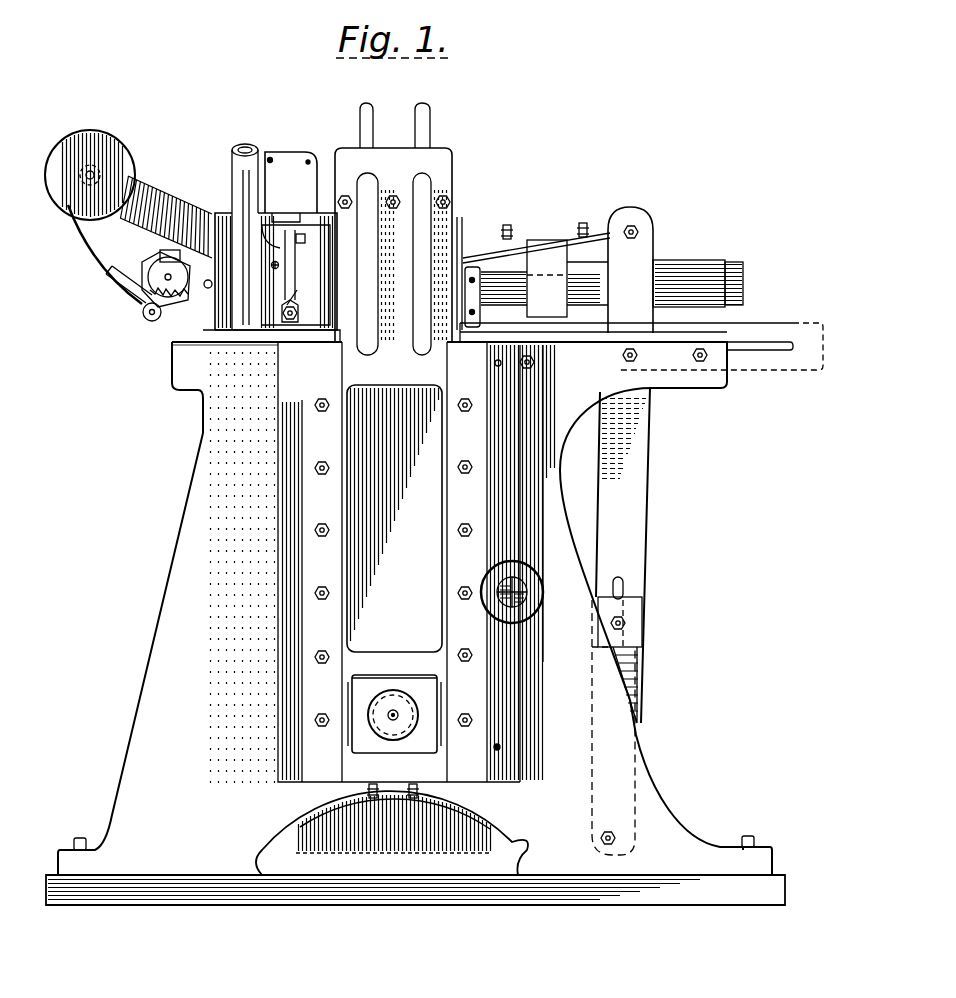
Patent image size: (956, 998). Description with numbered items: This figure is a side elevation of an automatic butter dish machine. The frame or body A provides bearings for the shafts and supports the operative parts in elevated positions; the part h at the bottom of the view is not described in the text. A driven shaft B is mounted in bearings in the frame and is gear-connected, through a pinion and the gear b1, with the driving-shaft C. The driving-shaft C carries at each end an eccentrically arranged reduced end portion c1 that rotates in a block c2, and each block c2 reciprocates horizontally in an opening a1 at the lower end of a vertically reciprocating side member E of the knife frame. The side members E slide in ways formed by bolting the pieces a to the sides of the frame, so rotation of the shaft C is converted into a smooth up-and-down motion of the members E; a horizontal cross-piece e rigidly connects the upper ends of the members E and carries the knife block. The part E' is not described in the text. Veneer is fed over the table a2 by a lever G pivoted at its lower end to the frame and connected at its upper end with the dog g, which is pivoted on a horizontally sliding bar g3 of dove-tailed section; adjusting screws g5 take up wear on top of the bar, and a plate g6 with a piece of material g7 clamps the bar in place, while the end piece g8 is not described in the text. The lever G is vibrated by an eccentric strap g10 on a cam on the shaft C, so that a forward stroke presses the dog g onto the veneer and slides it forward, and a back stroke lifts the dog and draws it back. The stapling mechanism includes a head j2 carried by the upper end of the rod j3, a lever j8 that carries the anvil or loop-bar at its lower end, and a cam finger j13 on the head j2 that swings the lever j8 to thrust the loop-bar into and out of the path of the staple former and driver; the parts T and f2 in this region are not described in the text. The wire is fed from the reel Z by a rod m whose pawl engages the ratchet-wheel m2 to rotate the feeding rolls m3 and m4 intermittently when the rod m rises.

The frame or body A is at (167, 570).
The pieces a is at (318, 688).
The openings a1 is at (352, 718).
The table a2 is at (772, 342).
The driven shaft B is at (520, 592).
The gear b1 is at (343, 850).
The driving-shaft C is at (430, 753).
The eccentrically arranged pins or reduced end portions c1 is at (497, 747).
The blocks c2 is at (437, 678).
The side members E is at (403, 506).
The slide plate base E' is at (256, 353).
The horizontal cross-piece e is at (368, 118).
The lever G is at (640, 445).
The dog g is at (470, 270).
The sliding bar g3 is at (695, 255).
The adjusting screws g5 is at (583, 224).
The plate g6 is at (552, 302).
The piece of material g7 is at (575, 292).
The bar end block g8 is at (742, 283).
The eccentric strap g10 is at (430, 852).
The base plate h is at (213, 852).
The head j2 is at (284, 178).
The rod j3 is at (268, 130).
The lever j8 is at (297, 290).
The cam finger j13 is at (324, 213).
The set screw f2 is at (305, 241).
The rod m is at (200, 290).
The ratchet-wheel m2 is at (170, 250).
The feeding roll m3 is at (152, 260).
The feeding roll m4 is at (143, 311).
The head cylinder T is at (230, 215).
The reel Z is at (102, 131).